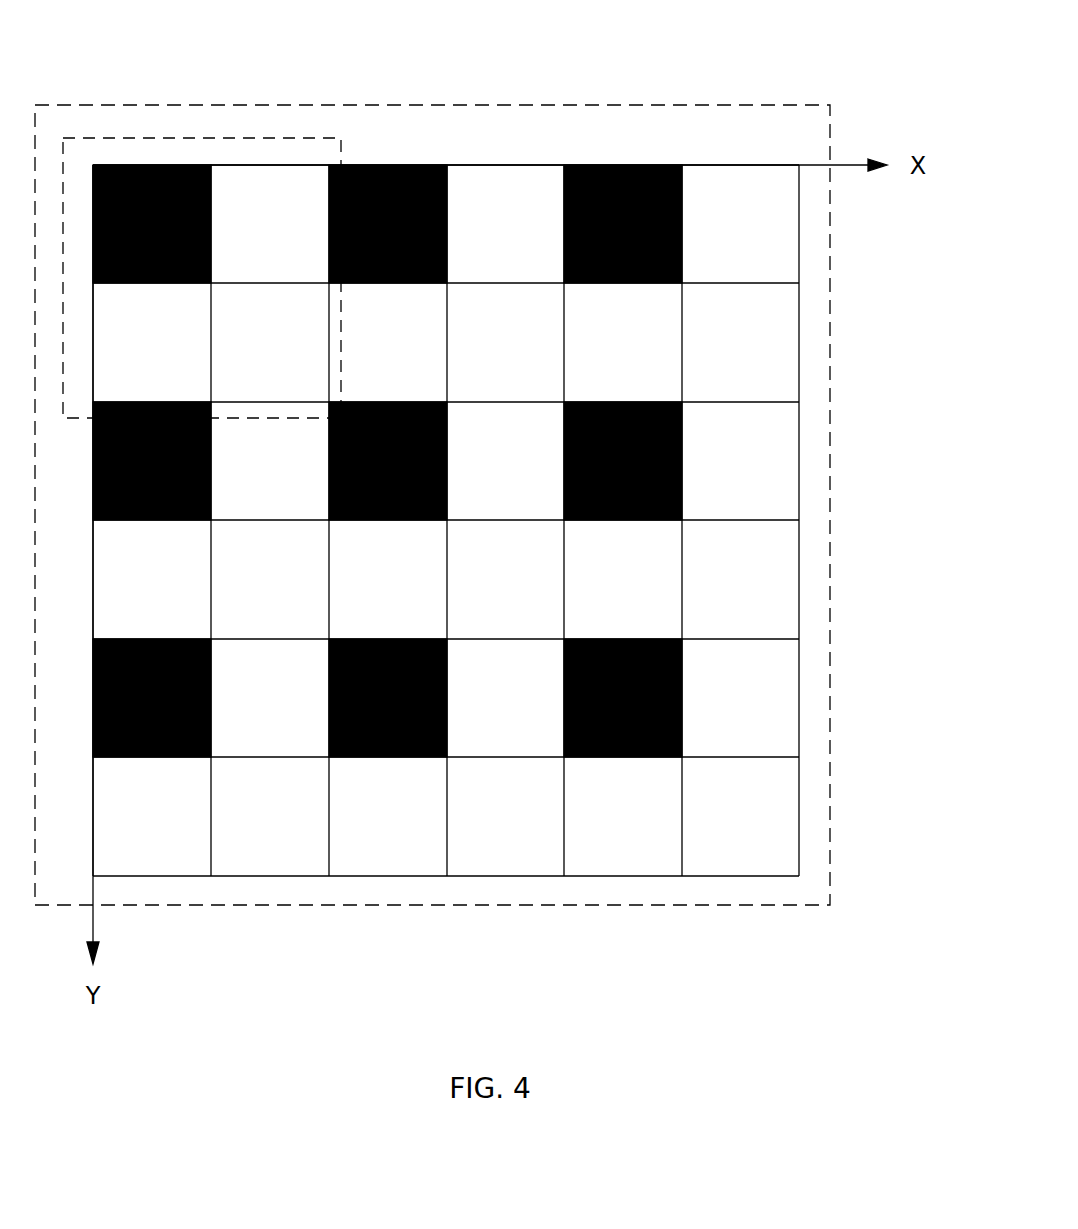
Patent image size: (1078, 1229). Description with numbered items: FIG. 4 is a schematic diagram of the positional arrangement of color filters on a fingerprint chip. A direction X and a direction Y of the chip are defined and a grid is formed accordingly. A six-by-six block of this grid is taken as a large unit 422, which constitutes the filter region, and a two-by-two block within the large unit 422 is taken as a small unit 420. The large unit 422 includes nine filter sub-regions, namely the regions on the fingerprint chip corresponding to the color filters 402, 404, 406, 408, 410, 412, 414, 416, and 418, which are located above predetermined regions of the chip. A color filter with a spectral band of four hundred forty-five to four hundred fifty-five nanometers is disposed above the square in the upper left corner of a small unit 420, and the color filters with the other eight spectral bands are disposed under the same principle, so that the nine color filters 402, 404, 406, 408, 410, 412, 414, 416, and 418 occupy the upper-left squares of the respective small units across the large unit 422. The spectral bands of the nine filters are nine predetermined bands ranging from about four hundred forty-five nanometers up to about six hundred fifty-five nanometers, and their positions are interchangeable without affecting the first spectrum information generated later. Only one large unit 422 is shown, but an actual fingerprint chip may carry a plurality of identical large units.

The color filter 402 is at (150, 165).
The color filter 404 is at (395, 165).
The color filter 406 is at (630, 165).
The color filter 408 is at (155, 401).
The color filter 410 is at (393, 401).
The color filter 412 is at (625, 401).
The color filter 414 is at (155, 638).
The color filter 416 is at (393, 638).
The color filter 418 is at (625, 638).
The small unit 420 is at (255, 138).
The large unit 422 is at (745, 105).